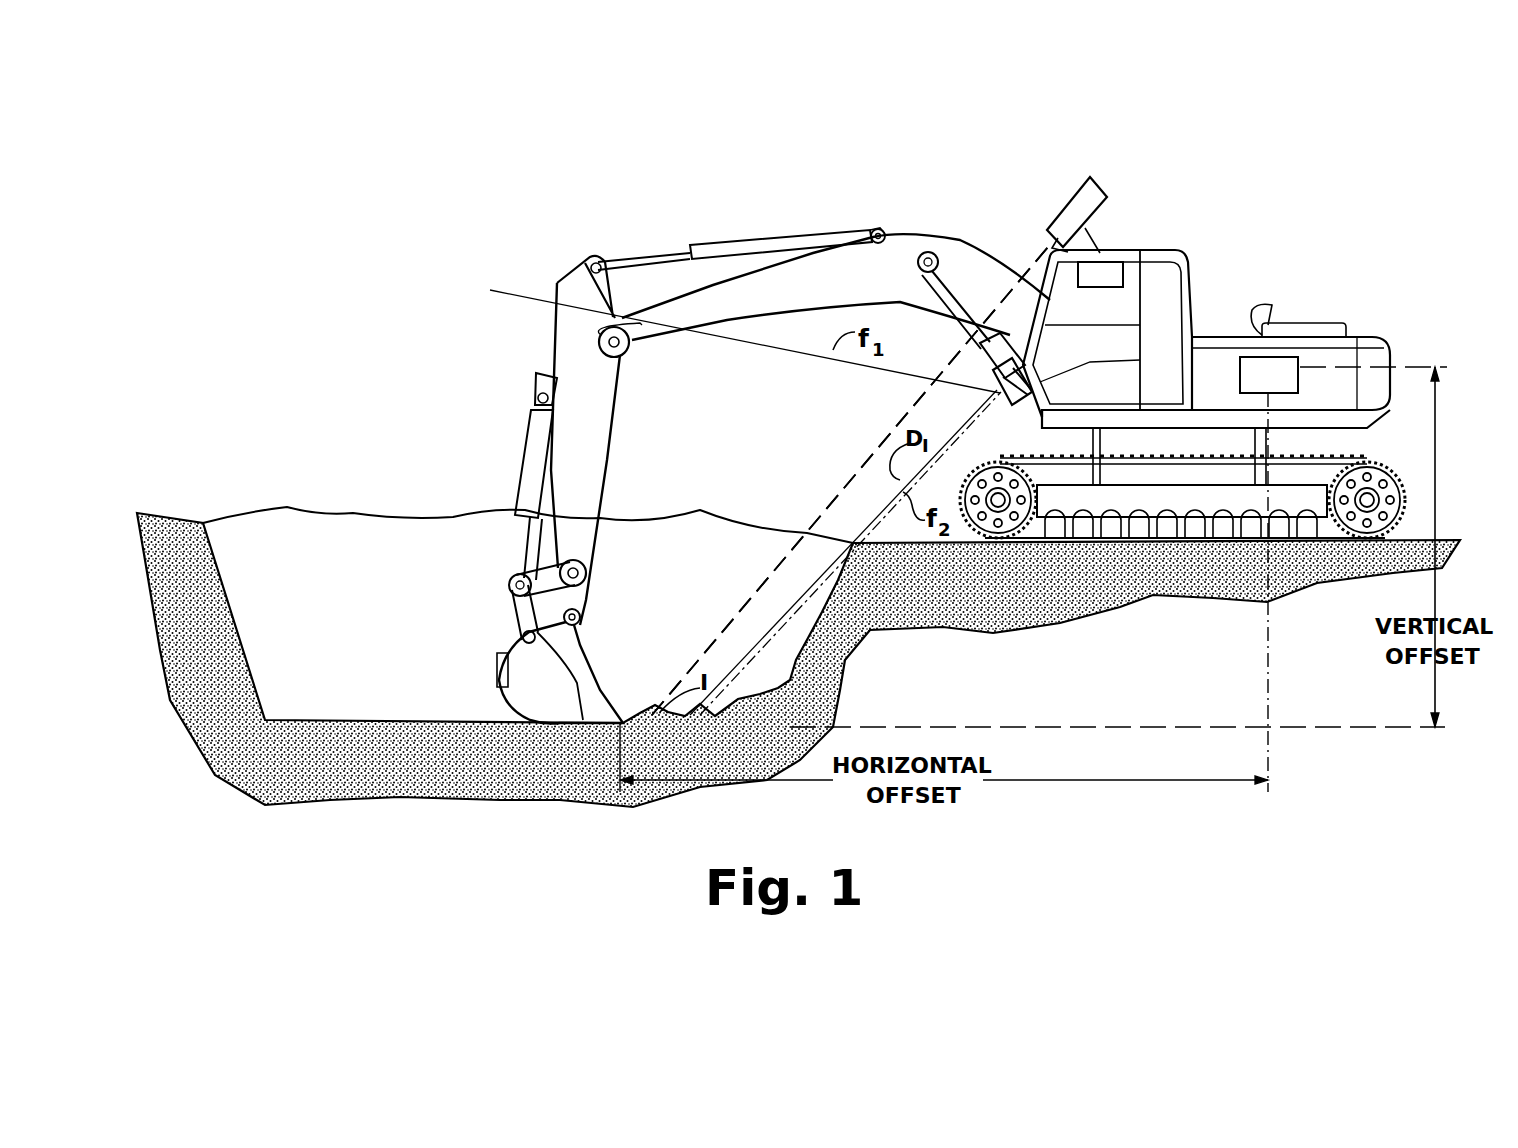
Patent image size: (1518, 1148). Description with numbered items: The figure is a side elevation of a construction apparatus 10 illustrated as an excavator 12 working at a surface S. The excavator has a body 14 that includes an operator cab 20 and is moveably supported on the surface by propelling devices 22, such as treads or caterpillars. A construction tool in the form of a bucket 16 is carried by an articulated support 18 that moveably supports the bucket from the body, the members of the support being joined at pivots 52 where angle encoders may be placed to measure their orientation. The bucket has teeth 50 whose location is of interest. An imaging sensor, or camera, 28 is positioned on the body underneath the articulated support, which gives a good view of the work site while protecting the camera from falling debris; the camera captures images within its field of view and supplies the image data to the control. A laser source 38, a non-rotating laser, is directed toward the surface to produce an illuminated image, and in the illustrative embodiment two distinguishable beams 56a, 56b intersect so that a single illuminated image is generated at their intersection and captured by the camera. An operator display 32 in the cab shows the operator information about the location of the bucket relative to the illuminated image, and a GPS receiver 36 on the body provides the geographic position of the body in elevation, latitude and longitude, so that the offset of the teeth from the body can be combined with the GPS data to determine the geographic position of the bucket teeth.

The construction apparatus 10 is at (957, 173).
The excavator 12 is at (1190, 246).
The body 14 is at (1368, 335).
The bucket 16 is at (510, 700).
The support 18 is at (590, 250).
The operator cab 20 is at (1192, 292).
The propelling devices 22 is at (1282, 460).
The imaging sensor (camera) 28 is at (1023, 405).
The operator display 32 is at (1124, 272).
The Global Positioning System (GPS) receiver 36 is at (1298, 378).
The laser source 38 is at (1092, 200).
The teeth 50 is at (624, 720).
The pivot 52 is at (598, 343).
The beam 56a is at (860, 470).
The beam 56b is at (850, 481).
The surface S is at (240, 630).